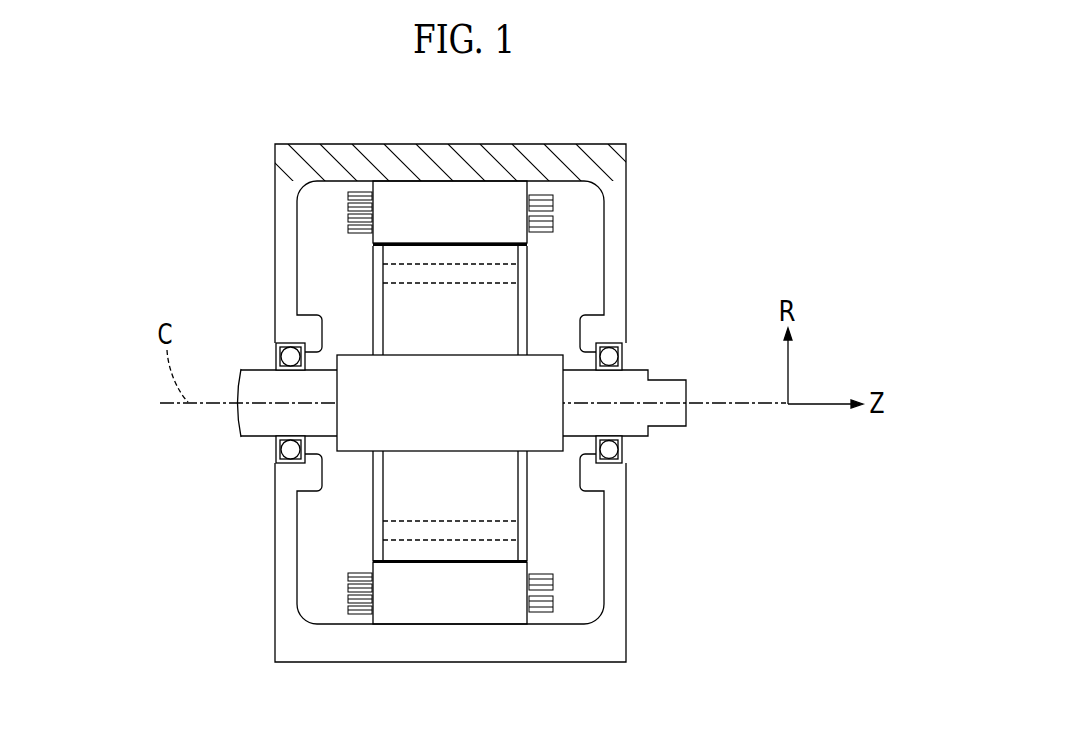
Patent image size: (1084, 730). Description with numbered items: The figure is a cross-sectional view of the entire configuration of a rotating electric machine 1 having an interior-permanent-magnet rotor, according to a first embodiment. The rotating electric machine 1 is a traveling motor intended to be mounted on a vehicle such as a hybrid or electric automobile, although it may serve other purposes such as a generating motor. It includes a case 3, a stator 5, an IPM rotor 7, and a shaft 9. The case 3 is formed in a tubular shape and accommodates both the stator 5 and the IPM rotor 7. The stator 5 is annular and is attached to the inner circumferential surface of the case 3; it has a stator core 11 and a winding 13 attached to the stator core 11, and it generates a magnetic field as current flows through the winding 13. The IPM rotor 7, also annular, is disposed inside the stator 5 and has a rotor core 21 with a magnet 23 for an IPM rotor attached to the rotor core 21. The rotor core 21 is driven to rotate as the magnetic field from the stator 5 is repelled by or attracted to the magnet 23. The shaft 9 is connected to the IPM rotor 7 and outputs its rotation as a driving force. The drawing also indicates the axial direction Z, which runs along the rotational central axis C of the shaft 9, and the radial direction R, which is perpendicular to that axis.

The rotating electric machine 1 is at (649, 142).
The case 3 is at (268, 168).
The stator 5 is at (547, 391).
The IPM rotor 7 is at (559, 483).
The shaft 9 is at (263, 427).
The stator core 11 is at (499, 188).
The winding 13 is at (553, 200).
The rotor core 21 is at (510, 322).
The magnet for an IPM rotor 23 is at (510, 275).